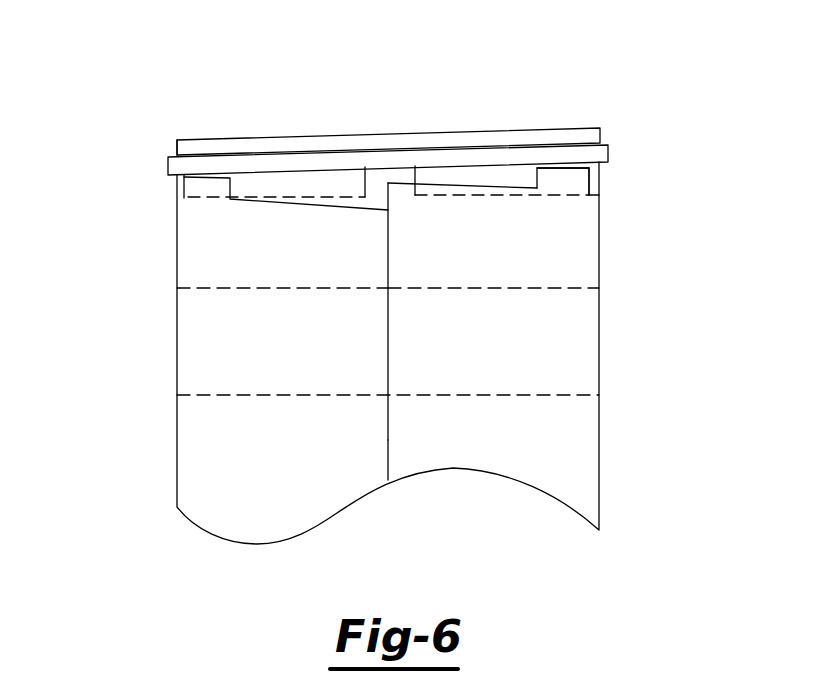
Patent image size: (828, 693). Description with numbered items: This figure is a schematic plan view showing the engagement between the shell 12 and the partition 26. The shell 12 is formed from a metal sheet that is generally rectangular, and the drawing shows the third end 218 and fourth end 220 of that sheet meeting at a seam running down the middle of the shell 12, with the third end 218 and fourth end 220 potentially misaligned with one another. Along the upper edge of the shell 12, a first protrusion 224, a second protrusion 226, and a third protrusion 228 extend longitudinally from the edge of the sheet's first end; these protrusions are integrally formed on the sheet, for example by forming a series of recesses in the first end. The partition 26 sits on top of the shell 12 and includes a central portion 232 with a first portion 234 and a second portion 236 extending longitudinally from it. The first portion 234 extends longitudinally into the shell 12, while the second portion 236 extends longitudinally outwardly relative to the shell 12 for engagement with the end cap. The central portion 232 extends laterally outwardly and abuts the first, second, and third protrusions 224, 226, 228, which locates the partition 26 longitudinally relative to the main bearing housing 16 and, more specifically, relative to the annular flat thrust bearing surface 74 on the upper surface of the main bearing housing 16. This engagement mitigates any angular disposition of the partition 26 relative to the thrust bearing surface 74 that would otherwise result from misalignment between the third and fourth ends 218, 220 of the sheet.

The shell 12 is at (120, 308).
The main bearing housing 16 is at (540, 288).
The partition 26 is at (600, 133).
The thrust bearing surface 74 is at (235, 290).
The third end 218 is at (388, 357).
The fourth end 220 is at (388, 450).
The first protrusion 224 is at (537, 178).
The second protrusion 226 is at (362, 186).
The third protrusion 228 is at (178, 187).
The central portion 232 is at (608, 152).
The first portion 234 is at (600, 180).
The second portion 236 is at (177, 148).